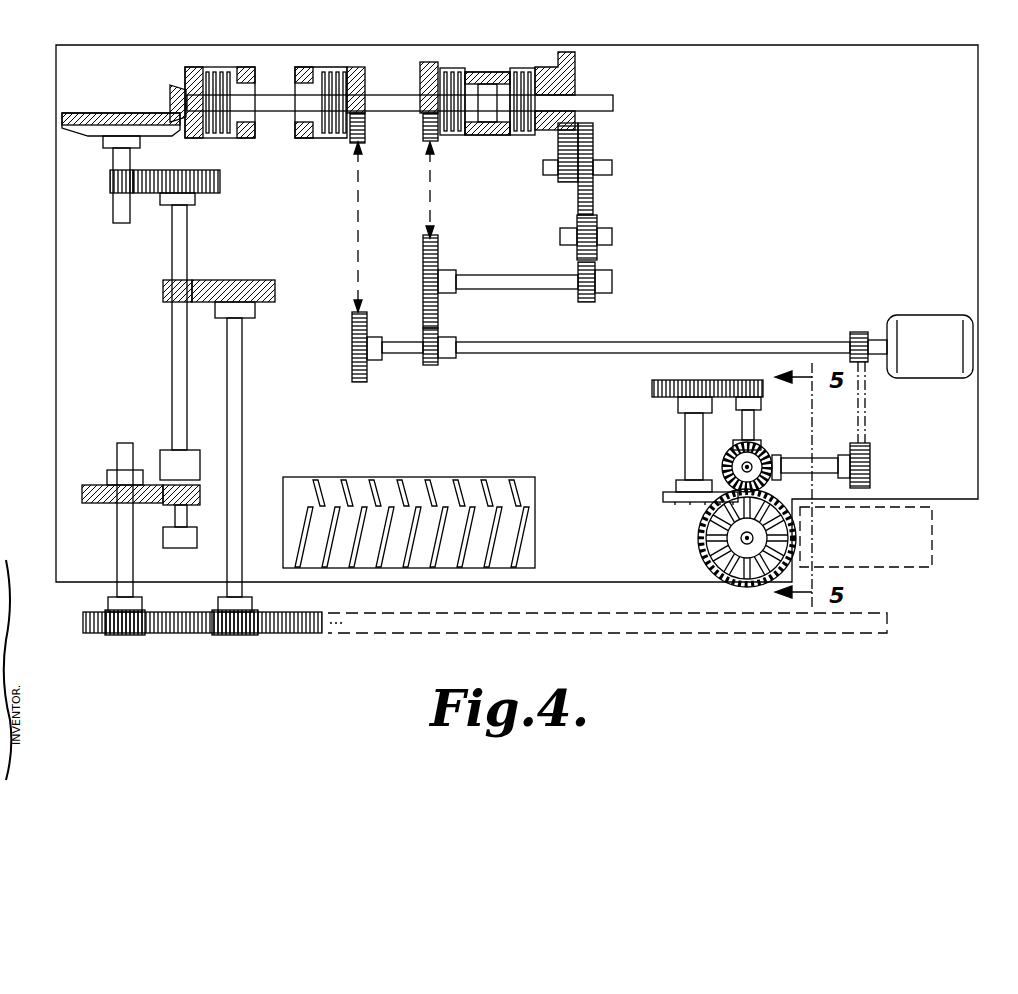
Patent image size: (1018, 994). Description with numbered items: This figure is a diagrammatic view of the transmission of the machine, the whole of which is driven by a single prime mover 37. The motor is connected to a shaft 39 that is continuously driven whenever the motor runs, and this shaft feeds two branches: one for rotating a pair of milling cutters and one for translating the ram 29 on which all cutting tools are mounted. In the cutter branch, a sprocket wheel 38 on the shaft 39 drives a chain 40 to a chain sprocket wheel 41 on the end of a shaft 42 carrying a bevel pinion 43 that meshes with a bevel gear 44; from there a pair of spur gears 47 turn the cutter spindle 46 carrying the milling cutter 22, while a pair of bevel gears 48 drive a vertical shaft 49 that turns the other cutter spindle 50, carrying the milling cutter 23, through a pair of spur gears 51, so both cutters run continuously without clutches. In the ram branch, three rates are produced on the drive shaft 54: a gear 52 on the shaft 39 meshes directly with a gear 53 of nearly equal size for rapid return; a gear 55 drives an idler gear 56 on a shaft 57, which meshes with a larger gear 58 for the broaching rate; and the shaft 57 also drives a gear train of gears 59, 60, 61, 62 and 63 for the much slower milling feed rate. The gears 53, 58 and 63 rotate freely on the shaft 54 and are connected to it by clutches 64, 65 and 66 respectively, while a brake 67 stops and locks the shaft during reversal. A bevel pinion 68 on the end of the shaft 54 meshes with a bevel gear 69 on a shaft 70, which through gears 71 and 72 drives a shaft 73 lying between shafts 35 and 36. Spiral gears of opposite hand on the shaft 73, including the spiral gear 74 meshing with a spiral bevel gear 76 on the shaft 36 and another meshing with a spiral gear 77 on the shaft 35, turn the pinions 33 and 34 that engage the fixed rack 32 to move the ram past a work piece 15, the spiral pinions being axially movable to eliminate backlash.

The ram 29 is at (795, 48).
The drive shaft 54 is at (383, 93).
The bevel gear 69 is at (72, 113).
The bevel pinion 68 is at (170, 88).
The brake 67 is at (215, 67).
The clutch 64 is at (325, 67).
The gear 53 is at (365, 128).
The clutch 65 is at (450, 70).
The gear 58 is at (438, 128).
The clutch 66 is at (520, 70).
The gear 63 is at (575, 72).
The gear 62 is at (565, 175).
The gear 61 is at (593, 200).
The gear 60 is at (598, 250).
The gear 59 is at (580, 300).
The shaft 57 is at (495, 275).
The idler gear 56 is at (423, 280).
The gear 55 is at (430, 365).
The gear 52 is at (362, 383).
The shaft 39 is at (772, 340).
The sprocket wheel 38 is at (856, 332).
The prime mover 37 is at (920, 325).
The chain 40 is at (866, 412).
The chain sprocket wheel 41 is at (870, 470).
The shaft 42 is at (825, 458).
The bevel pinion 43 is at (770, 458).
The bevel gears 48 is at (735, 448).
The vertical shaft 49 is at (756, 420).
The spur gears 51 is at (735, 382).
The cutter spindle 50 is at (686, 422).
The bevel gear 44 is at (686, 457).
The milling cutter 23 is at (678, 500).
The milling cutter 22 is at (707, 545).
The spur gears 47 is at (698, 538).
The cutter spindle 46 is at (753, 538).
The shaft 70 is at (113, 203).
The gear 71 is at (135, 195).
The gear 72 is at (220, 185).
The shaft 73 is at (187, 250).
The spiral gear 74 is at (165, 305).
The spiral bevel gear 76 is at (275, 292).
The shaft 36 is at (245, 588).
The shaft 35 is at (118, 588).
The spiral gear 77 is at (83, 491).
The work piece 15 is at (195, 493).
The rack 32 is at (178, 637).
The pinion 33 is at (118, 637).
The pinion 34 is at (232, 637).